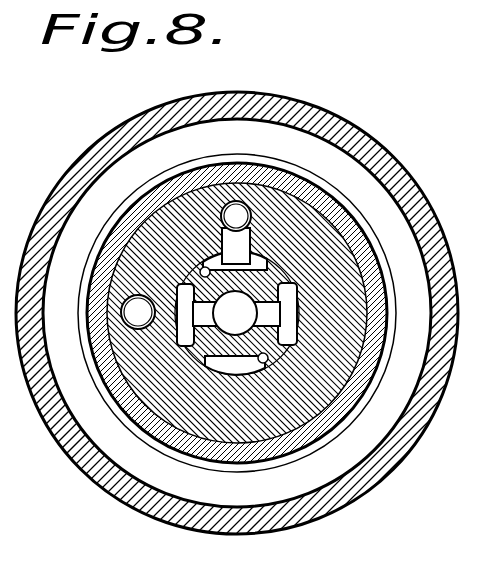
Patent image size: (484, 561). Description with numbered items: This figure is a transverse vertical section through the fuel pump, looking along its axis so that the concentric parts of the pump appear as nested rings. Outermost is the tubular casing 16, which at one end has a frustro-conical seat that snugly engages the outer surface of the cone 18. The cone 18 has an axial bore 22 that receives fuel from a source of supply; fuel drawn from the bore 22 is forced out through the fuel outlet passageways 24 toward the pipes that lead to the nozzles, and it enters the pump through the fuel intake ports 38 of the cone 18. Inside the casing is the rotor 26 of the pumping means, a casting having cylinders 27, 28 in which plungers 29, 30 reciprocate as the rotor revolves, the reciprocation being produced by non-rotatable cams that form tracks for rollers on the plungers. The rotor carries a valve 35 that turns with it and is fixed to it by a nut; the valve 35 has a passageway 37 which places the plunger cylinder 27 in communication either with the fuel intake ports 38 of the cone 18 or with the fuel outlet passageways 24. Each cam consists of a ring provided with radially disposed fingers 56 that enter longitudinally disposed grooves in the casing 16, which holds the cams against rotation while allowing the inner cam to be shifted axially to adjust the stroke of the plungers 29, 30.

The tubular casing 16 is at (305, 213).
The cone 18 is at (322, 190).
The axial bore 22 is at (235, 313).
The passageways 24 is at (160, 233).
The rotor 26 is at (328, 253).
The cylinder 27 is at (246, 204).
The cylinder 28 is at (136, 318).
The plunger 29 is at (236, 201).
The plunger 30 is at (140, 318).
The valve 35 is at (360, 226).
The passageway 37 is at (283, 203).
The fuel intake ports 38 is at (122, 245).
The fingers 56 is at (478, 388).